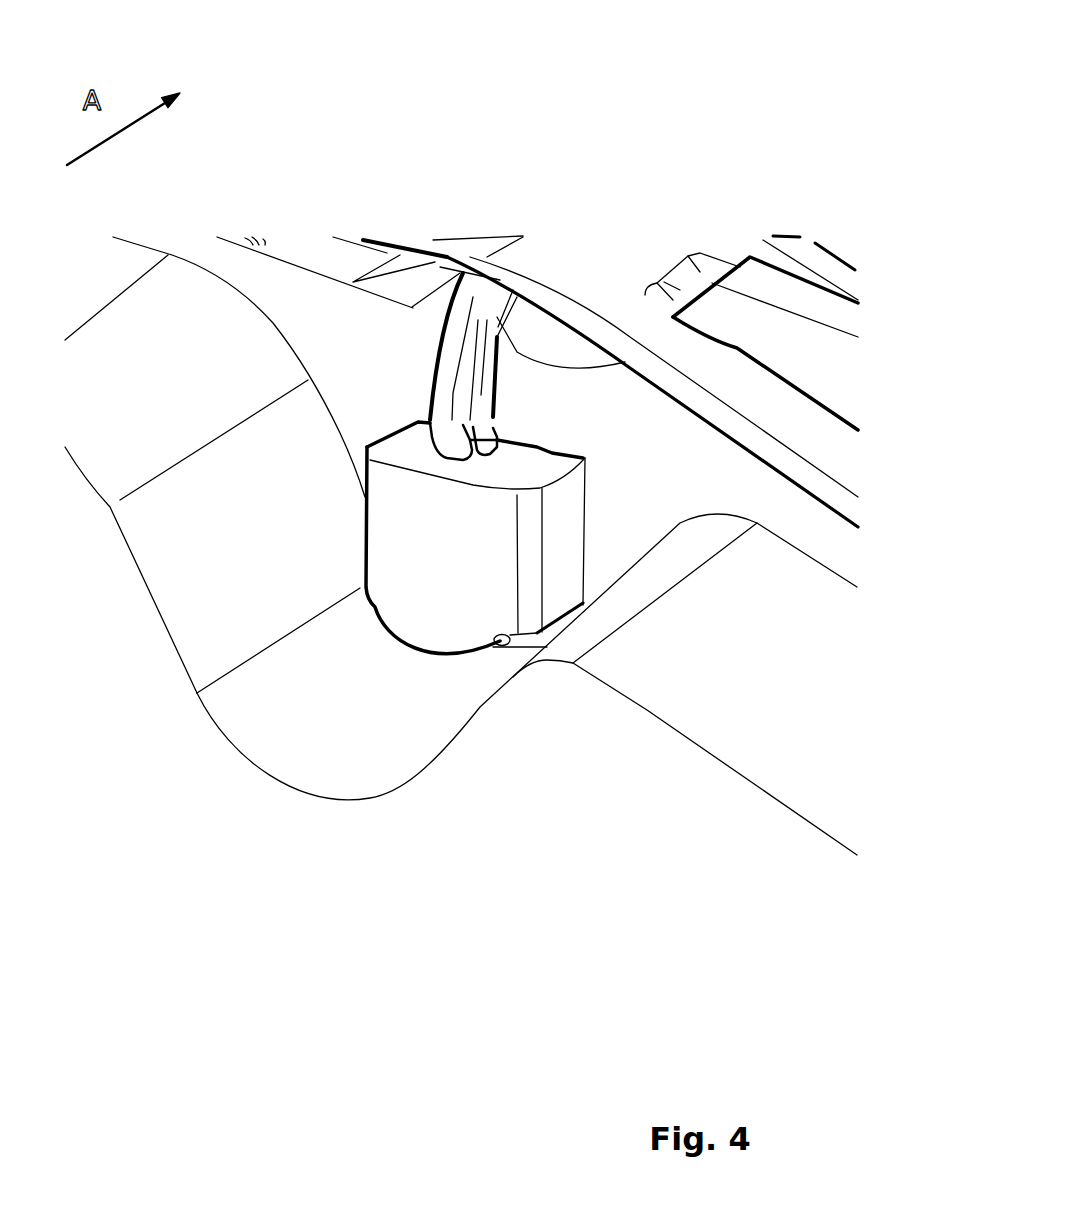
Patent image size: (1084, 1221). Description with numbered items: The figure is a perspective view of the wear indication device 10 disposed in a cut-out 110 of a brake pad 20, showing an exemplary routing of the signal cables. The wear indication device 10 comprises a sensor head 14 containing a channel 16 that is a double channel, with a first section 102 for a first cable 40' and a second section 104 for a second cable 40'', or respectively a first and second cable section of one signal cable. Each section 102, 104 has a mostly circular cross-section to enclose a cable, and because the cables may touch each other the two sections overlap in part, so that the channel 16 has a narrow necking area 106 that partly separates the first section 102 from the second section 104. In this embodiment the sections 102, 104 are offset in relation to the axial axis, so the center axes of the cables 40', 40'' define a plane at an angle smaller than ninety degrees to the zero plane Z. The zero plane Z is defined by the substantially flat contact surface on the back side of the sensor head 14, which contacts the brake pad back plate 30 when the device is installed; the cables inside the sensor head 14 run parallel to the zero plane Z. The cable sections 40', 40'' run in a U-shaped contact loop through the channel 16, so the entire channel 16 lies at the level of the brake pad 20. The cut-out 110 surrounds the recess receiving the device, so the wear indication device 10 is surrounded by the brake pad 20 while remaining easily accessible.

The wear indication device 10 is at (542, 379).
The sensor head 14 is at (447, 565).
The channel 16 is at (494, 480).
The brake pad 20 is at (295, 845).
The brake pad back plate 30 is at (637, 490).
The first cable 40' is at (436, 253).
The second cable 40'' is at (481, 250).
The first section 102 is at (440, 423).
The second section 104 is at (503, 433).
The necking area 106 is at (480, 486).
The cut-out 110 is at (304, 737).
The zero plane Z is at (665, 465).